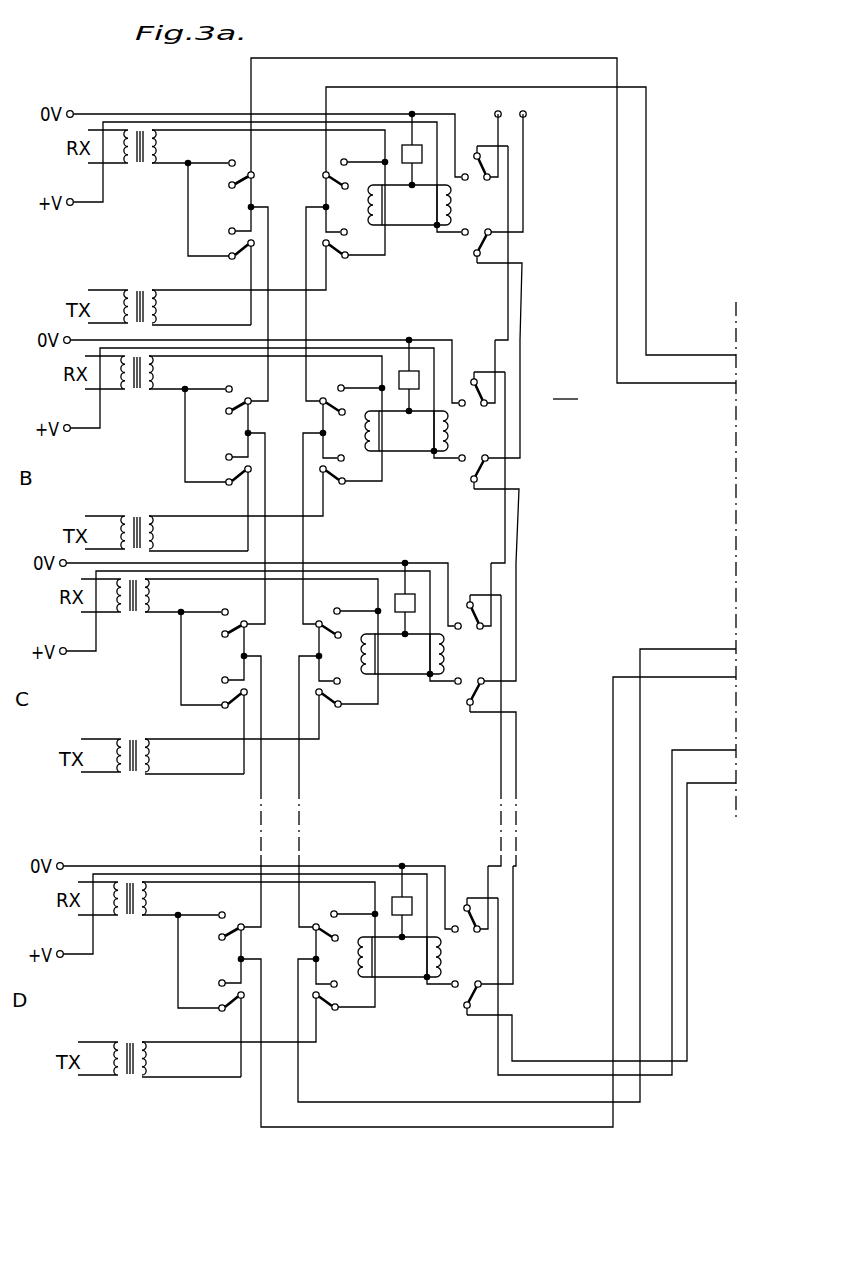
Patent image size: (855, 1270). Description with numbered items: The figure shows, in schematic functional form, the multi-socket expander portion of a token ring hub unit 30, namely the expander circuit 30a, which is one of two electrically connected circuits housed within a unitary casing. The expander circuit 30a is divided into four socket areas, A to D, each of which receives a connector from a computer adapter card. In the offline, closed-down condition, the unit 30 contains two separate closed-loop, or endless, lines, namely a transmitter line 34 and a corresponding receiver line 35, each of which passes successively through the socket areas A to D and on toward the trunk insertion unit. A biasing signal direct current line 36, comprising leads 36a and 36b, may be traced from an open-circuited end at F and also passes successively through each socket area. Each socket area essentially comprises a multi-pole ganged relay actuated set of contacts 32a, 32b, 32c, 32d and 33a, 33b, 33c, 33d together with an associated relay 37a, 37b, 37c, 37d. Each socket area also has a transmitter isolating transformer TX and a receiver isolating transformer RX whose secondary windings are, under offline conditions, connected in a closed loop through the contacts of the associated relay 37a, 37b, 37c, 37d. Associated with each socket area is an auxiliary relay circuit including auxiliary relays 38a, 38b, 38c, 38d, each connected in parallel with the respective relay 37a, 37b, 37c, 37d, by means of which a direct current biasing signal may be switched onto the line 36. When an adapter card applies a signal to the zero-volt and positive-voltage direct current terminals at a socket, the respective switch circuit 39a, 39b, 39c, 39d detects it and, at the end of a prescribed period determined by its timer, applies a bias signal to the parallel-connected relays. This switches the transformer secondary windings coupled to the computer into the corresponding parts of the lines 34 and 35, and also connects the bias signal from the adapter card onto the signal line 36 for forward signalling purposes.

The token ring hub unit 30 is at (565, 388).
The expander circuit 30a is at (148, 110).
The relay actuated contacts 32a is at (215, 202).
The relay actuated contacts 32b is at (193, 468).
The relay actuated contacts 32c is at (189, 691).
The relay actuated contacts 32d is at (183, 994).
The relay actuated contacts 33a is at (357, 236).
The relay actuated contacts 33b is at (274, 443).
The relay actuated contacts 33c is at (271, 666).
The relay actuated contacts 33d is at (268, 970).
The transmitter line 34 is at (648, 212).
The receiver line 35 is at (618, 265).
The biasing signal direct current line 36 is at (526, 286).
The lead of biasing signal line 36a is at (508, 247).
The lead of biasing signal line 36b is at (524, 414).
The relay 37a is at (370, 184).
The relay 37b is at (391, 405).
The relay 37c is at (387, 628).
The relay 37d is at (384, 931).
The auxiliary relay 38a is at (448, 233).
The auxiliary relay 38b is at (436, 475).
The auxiliary relay 38c is at (432, 698).
The auxiliary relay 38d is at (429, 1001).
The switch circuit 39a is at (420, 146).
The switch circuit 39b is at (428, 357).
The switch circuit 39c is at (423, 581).
The switch circuit 39d is at (420, 875).
The open circuited end F is at (512, 112).